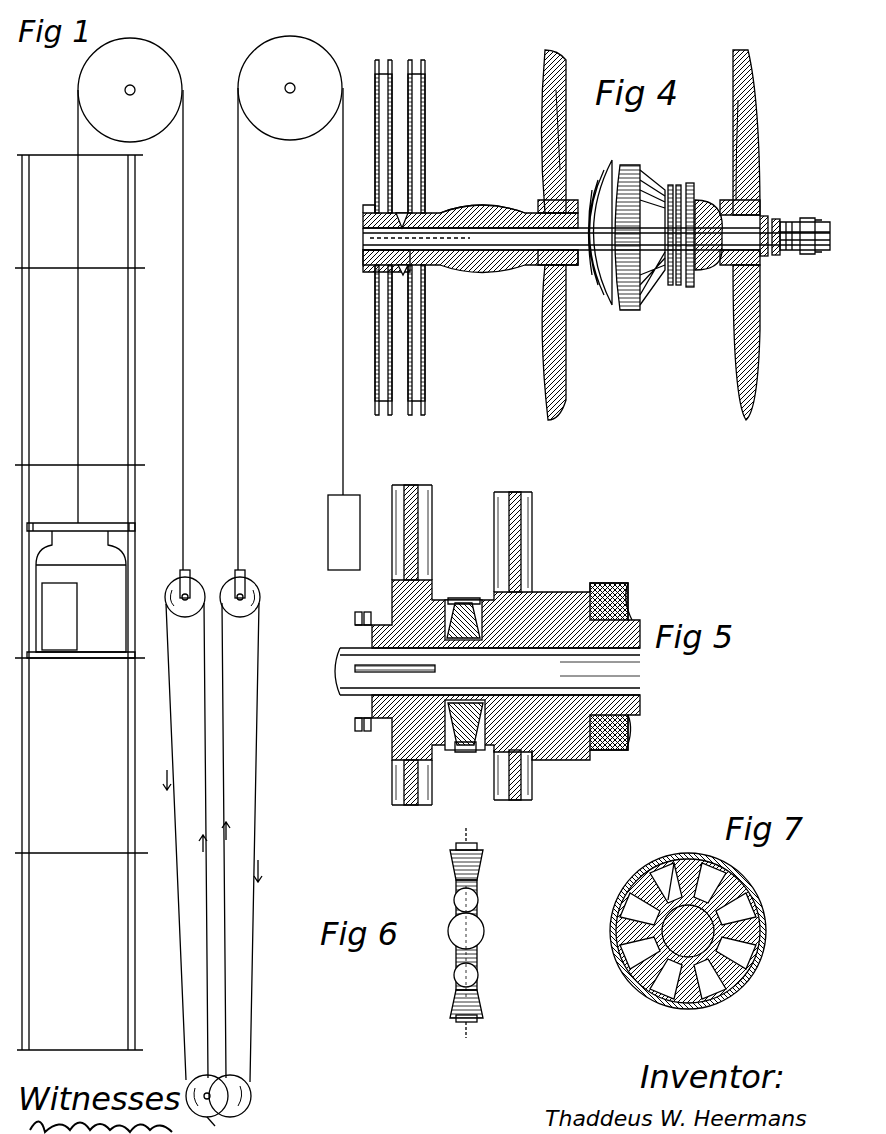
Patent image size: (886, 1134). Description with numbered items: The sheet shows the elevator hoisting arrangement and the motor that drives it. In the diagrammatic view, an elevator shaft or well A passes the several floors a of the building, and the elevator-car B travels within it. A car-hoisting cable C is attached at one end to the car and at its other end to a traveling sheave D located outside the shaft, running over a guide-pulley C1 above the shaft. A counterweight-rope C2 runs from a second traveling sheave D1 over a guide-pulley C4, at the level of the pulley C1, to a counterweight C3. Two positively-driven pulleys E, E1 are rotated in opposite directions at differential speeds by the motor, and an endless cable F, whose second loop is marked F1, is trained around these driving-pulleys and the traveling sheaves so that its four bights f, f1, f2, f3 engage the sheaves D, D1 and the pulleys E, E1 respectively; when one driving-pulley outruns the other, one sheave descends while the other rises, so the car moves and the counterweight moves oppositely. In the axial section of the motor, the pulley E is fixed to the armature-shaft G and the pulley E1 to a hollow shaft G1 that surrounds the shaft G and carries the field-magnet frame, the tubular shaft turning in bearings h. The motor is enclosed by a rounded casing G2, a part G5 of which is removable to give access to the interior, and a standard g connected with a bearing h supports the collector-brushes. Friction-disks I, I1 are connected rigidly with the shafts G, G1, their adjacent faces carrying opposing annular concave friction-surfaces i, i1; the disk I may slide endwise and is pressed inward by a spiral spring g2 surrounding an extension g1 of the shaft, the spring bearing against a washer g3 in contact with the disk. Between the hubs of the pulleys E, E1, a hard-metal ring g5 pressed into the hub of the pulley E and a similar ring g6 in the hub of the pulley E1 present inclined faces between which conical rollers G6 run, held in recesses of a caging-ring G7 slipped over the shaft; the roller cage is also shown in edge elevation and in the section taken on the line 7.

In FIG. 1, the elevator shaft or well A is at (136, 740).
In FIG. 1, the floors a is at (88, 570).
In FIG. 1, the elevator-car B is at (90, 612).
In FIG. 1, the car-hoisting cable C is at (183, 360).
In FIG. 1, the guide-pulley C1 is at (130, 90).
In FIG. 1, the counterweight-rope C2 is at (245, 320).
In FIG. 1, the counterweight C3 is at (332, 508).
In FIG. 1, the guide-pulley C4 is at (290, 88).
In FIG. 1, the traveling sheave D is at (192, 592).
In FIG. 1, the traveling sheave D1 is at (250, 595).
In FIG. 4, the driving-pulley E is at (385, 416).
In FIG. 5, the driving-pulley E is at (412, 645).
In FIG. 1, the driving-pulley E1 is at (250, 1110).
In FIG. 4, the driving-pulley E1 is at (418, 416).
In FIG. 5, the driving-pulley E1 is at (513, 646).
In FIG. 1, the endless cable F is at (185, 841).
In FIG. 1, the belt F1 is at (262, 735).
In FIG. 1, the bight f is at (170, 628).
In FIG. 1, the bight f1 is at (262, 612).
In FIG. 1, the bight f2 is at (182, 1069).
In FIG. 1, the bight f3 is at (250, 1080).
In FIG. 4, the shaft G is at (490, 266).
In FIG. 5, the shaft G is at (600, 665).
In FIG. 7, the shaft G is at (755, 918).
In FIG. 4, the hollow shaft G1 is at (510, 210).
In FIG. 5, the hollow shaft G1 is at (628, 620).
In FIG. 4, the rounded casing G2 is at (632, 310).
In FIG. 4, the casing part G5 is at (665, 200).
In FIG. 4, the conical rollers G6 is at (402, 276).
In FIG. 5, the conical rollers G6 is at (466, 600).
In FIG. 6, the conical rollers G6 is at (484, 930).
In FIG. 7, the conical rollers G6 is at (700, 868).
In FIG. 6, the caging-ring G7 is at (482, 880).
In FIG. 7, the caging-ring G7 is at (670, 870).
In FIG. 4, the standard g is at (808, 218).
In FIG. 4, the extension g1 is at (790, 255).
In FIG. 4, the spiral spring g2 is at (778, 218).
In FIG. 4, the washer g3 is at (766, 214).
In FIG. 4, the hard-metal ring g5 is at (370, 212).
In FIG. 5, the hard-metal ring g5 is at (447, 612).
In FIG. 4, the hard-metal ring g6 is at (410, 215).
In FIG. 5, the hard-metal ring g6 is at (466, 752).
In FIG. 4, the bearings h is at (478, 210).
In FIG. 5, the bearings h is at (622, 752).
In FIG. 4, the friction-disk I is at (760, 108).
In FIG. 4, the friction-disk I1 is at (545, 120).
In FIG. 4, the annular concave friction-surface i is at (733, 100).
In FIG. 4, the annular concave friction-surface i1 is at (566, 108).
In FIG. 6, the section line 7 is at (465, 932).